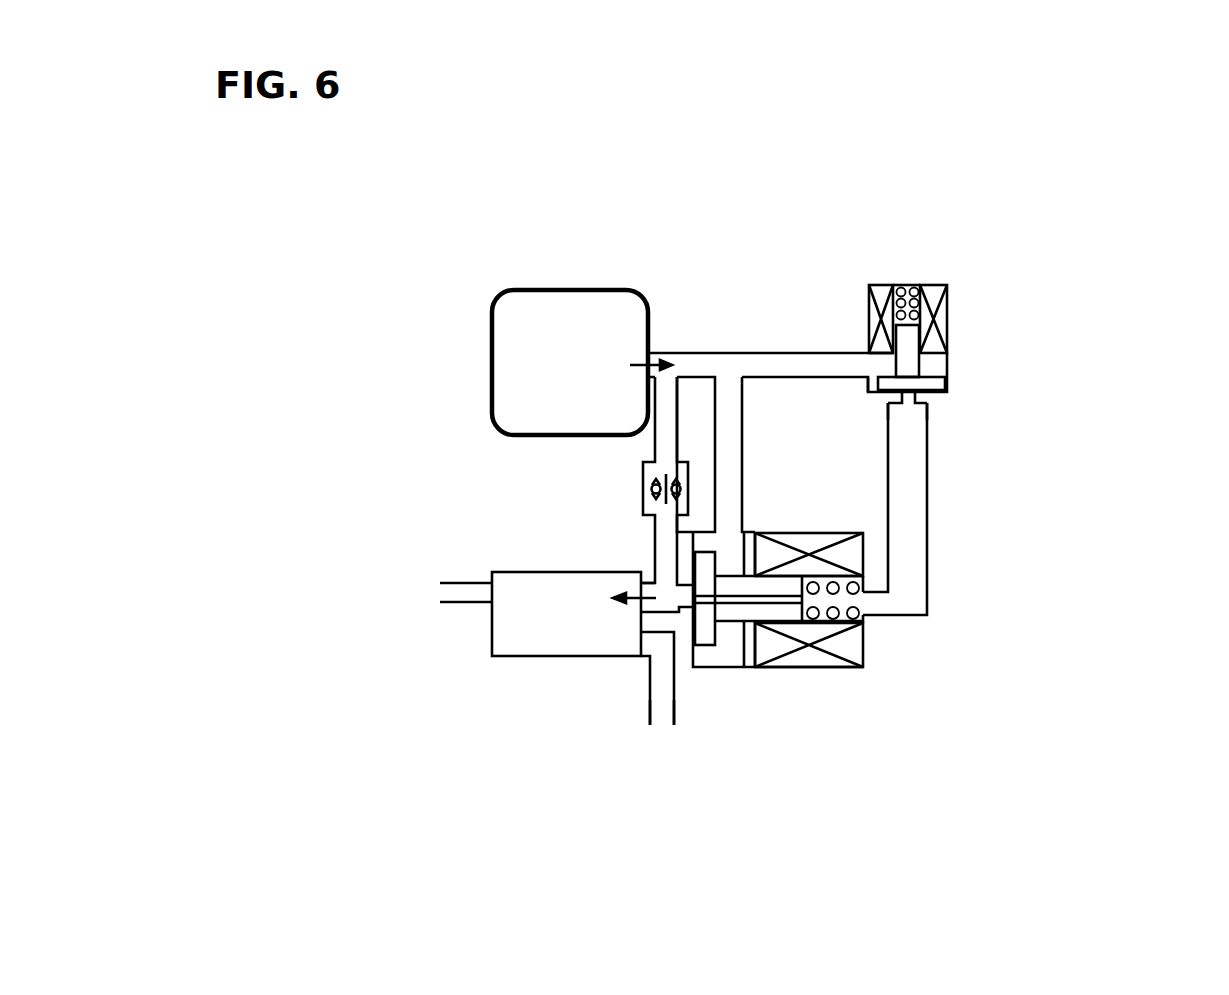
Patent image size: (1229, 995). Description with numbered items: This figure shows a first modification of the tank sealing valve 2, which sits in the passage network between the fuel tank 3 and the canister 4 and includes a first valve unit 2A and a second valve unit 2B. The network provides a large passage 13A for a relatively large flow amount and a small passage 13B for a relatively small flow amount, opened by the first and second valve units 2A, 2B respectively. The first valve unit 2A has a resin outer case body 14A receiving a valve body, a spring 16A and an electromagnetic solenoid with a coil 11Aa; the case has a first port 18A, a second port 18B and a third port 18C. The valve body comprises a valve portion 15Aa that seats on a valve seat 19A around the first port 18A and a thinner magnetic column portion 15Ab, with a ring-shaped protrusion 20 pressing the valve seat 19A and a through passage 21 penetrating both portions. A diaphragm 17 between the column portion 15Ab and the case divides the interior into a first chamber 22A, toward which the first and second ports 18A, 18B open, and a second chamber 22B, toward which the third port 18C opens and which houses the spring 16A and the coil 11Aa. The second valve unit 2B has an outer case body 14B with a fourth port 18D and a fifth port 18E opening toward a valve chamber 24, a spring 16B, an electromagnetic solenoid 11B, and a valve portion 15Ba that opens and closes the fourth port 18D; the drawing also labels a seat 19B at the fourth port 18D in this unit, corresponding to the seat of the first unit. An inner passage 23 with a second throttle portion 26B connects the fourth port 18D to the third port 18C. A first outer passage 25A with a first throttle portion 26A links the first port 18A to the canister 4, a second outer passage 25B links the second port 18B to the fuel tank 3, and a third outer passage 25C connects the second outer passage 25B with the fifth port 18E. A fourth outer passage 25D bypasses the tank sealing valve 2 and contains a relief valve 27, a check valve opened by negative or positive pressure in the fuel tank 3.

The tank sealing valve 2 is at (1132, 195).
The first valve unit 2A is at (767, 697).
The second valve unit 2B is at (982, 260).
The fuel tank 3 is at (508, 363).
The canister 4 is at (524, 633).
The coil 11Aa is at (816, 545).
The electromagnetic solenoid 11B is at (940, 283).
The large passage 13A is at (707, 404).
The small passage 13B is at (970, 603).
The outer case body 14A is at (724, 682).
The outer case body 14B is at (960, 377).
The valve portion 15Aa is at (702, 558).
The column portion 15Ab is at (790, 613).
The valve portion 15Ba is at (930, 378).
The spring 16A is at (852, 640).
The spring 16B is at (893, 283).
The diaphragm 17 is at (735, 682).
The first port 18A is at (690, 597).
The second port 18B is at (724, 532).
The third port 18C is at (865, 603).
The fourth port 18D is at (904, 395).
The fifth port 18E is at (866, 368).
The valve seat 19A is at (712, 665).
The second port 19B is at (932, 389).
The protrusion 20 is at (690, 638).
The through passage 21 is at (758, 599).
The first chamber 22A is at (720, 672).
The second chamber 22B is at (865, 633).
The inner passage 23 is at (927, 507).
The valve chamber 24 is at (883, 348).
The first outer passage 25A is at (655, 603).
The second outer passage 25B is at (737, 450).
The third outer passage 25C is at (797, 358).
The fourth outer passage 25D is at (668, 402).
The first throttle portion 26A is at (690, 626).
The second throttle portion 26B is at (917, 404).
The relief valve 27 is at (628, 471).